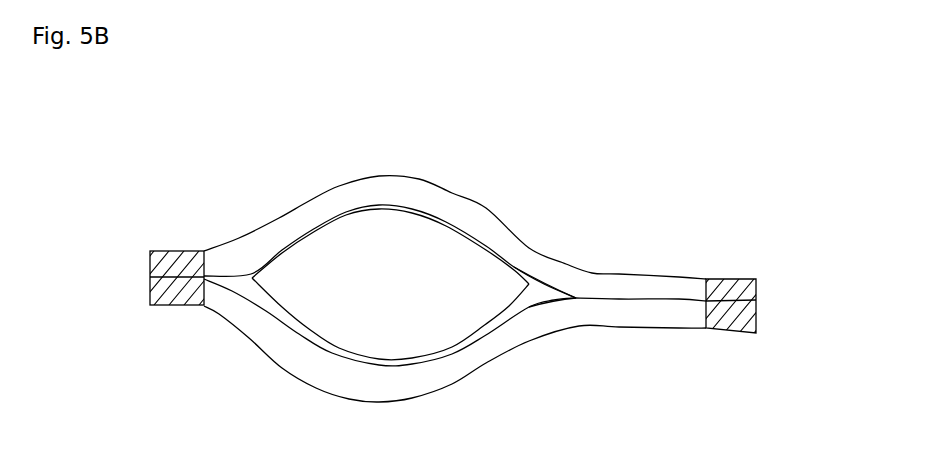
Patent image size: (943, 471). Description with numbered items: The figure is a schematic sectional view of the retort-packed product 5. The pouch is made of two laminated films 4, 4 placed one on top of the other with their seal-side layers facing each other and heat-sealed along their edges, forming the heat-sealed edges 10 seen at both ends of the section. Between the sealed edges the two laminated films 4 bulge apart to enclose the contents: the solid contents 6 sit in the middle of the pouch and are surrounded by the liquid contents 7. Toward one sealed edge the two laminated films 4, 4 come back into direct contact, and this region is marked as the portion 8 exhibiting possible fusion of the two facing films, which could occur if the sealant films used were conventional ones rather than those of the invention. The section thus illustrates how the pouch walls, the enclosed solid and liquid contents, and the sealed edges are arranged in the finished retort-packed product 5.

The laminated film 4 is at (507, 238).
The retort-packed product 5 is at (634, 262).
The solid contents 6 is at (405, 335).
The liquid contents 7 is at (538, 298).
The portion exhibiting possible fusion 8 is at (642, 300).
The heat-sealed edges 10 is at (151, 289).